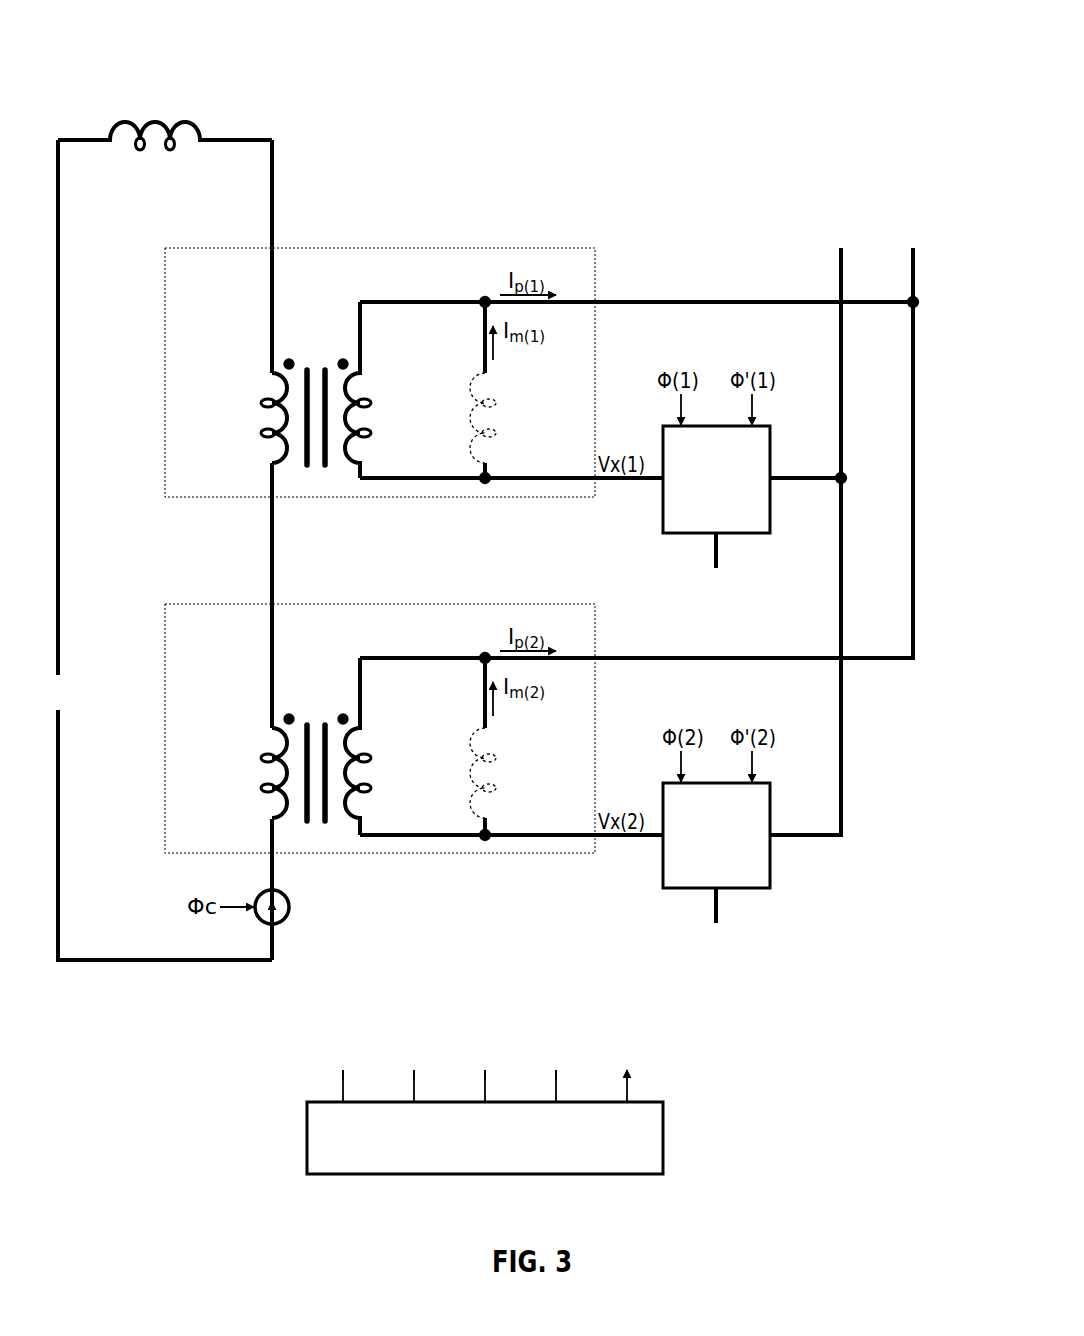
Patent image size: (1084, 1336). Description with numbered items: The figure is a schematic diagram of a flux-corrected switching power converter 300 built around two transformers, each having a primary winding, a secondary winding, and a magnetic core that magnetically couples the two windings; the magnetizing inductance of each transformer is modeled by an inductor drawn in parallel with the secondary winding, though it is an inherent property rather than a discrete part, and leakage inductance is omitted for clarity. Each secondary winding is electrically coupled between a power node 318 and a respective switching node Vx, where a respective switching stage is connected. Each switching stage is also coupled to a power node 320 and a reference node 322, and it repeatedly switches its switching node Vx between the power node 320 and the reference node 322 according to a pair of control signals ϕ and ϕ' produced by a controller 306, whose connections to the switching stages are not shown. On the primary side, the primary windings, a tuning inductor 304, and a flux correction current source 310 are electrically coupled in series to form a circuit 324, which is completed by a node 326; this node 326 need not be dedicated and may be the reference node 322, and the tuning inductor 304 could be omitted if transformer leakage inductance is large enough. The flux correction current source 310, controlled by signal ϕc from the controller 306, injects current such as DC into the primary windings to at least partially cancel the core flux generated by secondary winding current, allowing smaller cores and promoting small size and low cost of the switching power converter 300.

The switching power converter 300 is at (896, 31).
The tuning inductor 304 is at (156, 108).
The controller 306 is at (538, 1150).
The flux correction current source 310 is at (290, 907).
The power node 318 is at (642, 439).
The power node 320 is at (813, 528).
The reference node 322 is at (716, 743).
The circuit 324 is at (284, 130).
The node 326 is at (157, 550).